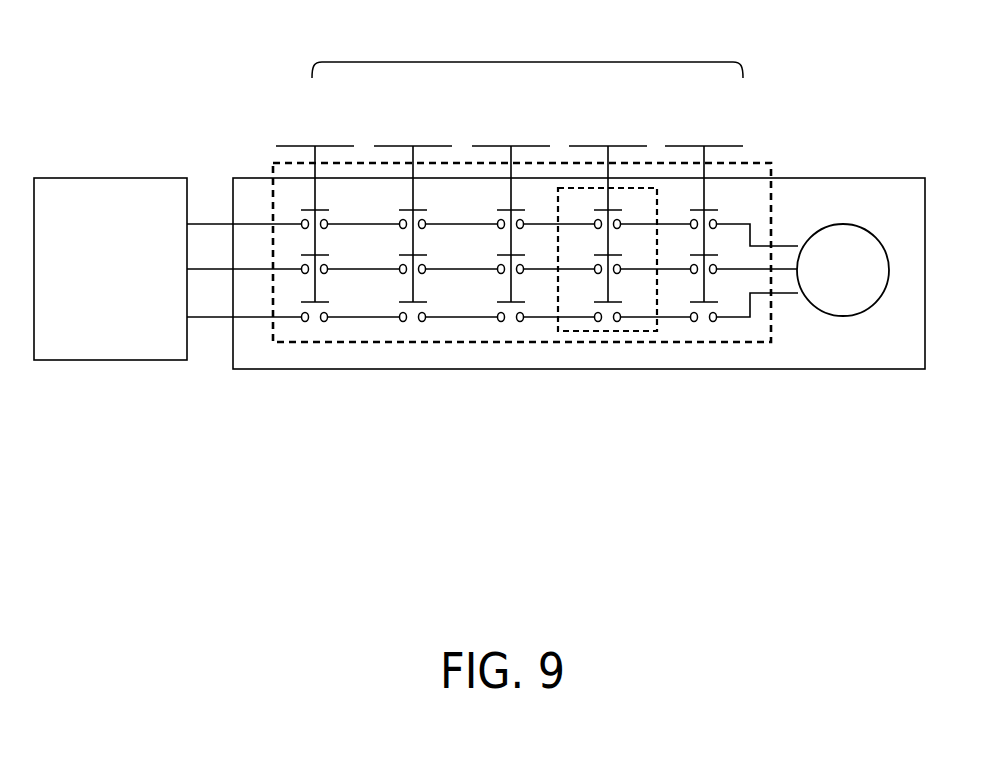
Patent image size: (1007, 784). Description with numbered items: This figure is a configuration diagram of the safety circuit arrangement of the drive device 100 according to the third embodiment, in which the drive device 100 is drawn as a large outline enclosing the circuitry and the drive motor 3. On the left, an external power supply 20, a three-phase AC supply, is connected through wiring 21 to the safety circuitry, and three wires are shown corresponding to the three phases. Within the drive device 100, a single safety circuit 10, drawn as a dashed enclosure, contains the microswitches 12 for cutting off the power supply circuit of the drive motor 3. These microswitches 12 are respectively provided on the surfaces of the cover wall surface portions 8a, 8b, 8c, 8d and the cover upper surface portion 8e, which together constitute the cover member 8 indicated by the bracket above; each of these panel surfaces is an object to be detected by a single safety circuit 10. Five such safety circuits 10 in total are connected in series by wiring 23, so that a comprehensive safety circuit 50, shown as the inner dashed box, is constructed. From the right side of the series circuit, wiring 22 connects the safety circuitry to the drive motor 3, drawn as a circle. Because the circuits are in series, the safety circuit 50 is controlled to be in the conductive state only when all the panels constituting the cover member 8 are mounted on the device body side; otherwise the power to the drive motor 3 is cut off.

The drive device 100 is at (885, 370).
The external power supply 20 is at (102, 360).
The wiring 21 is at (212, 316).
The safety circuit 10 is at (620, 333).
The safety circuit 50 is at (568, 333).
The cover member 8 is at (527, 62).
The cover wall surface portion 8a is at (325, 145).
The cover wall surface portion 8b is at (426, 145).
The cover wall surface portion 8c is at (521, 145).
The cover wall surface portion 8d is at (618, 145).
The cover upper surface portion 8e is at (718, 145).
The microswitch 12 is at (305, 321).
The wiring 23 is at (455, 318).
The wiring 22 is at (783, 295).
The drive motor 3 is at (832, 317).